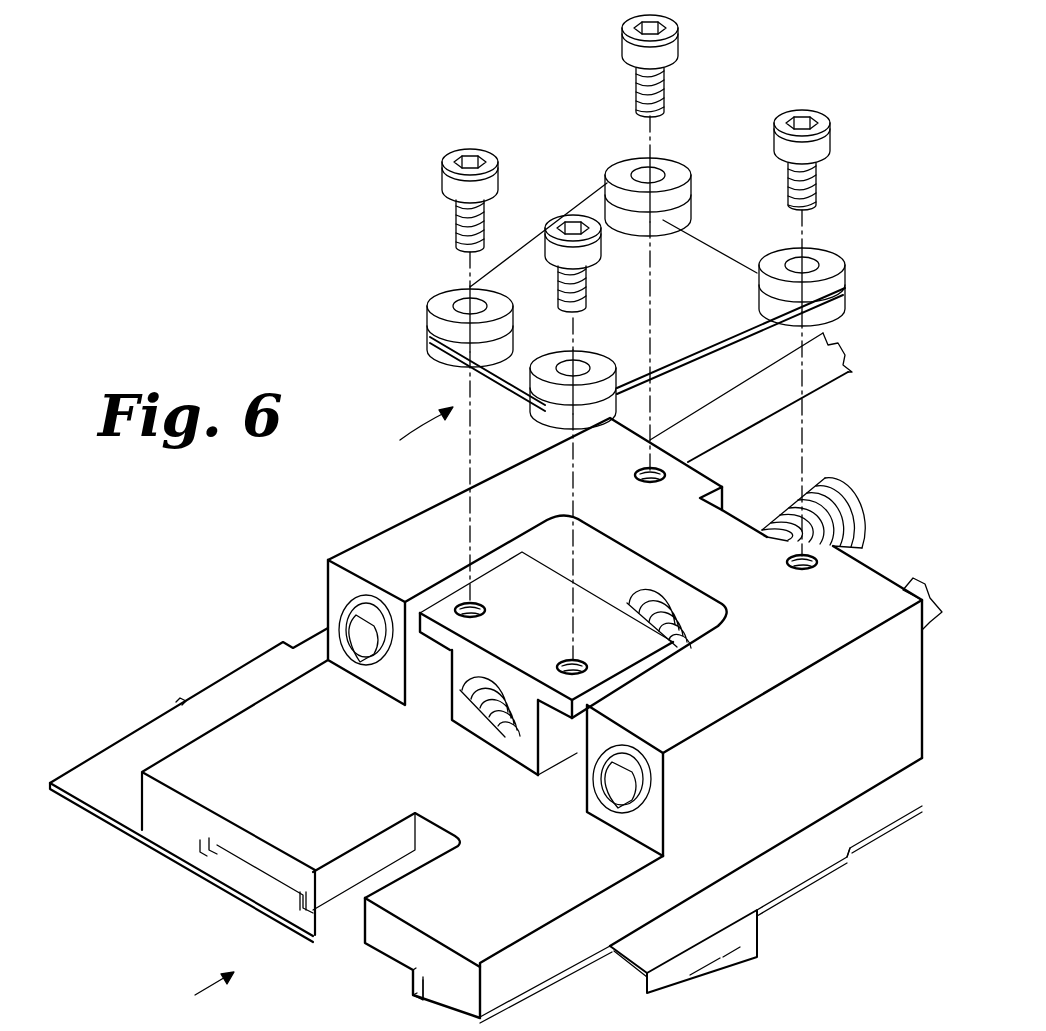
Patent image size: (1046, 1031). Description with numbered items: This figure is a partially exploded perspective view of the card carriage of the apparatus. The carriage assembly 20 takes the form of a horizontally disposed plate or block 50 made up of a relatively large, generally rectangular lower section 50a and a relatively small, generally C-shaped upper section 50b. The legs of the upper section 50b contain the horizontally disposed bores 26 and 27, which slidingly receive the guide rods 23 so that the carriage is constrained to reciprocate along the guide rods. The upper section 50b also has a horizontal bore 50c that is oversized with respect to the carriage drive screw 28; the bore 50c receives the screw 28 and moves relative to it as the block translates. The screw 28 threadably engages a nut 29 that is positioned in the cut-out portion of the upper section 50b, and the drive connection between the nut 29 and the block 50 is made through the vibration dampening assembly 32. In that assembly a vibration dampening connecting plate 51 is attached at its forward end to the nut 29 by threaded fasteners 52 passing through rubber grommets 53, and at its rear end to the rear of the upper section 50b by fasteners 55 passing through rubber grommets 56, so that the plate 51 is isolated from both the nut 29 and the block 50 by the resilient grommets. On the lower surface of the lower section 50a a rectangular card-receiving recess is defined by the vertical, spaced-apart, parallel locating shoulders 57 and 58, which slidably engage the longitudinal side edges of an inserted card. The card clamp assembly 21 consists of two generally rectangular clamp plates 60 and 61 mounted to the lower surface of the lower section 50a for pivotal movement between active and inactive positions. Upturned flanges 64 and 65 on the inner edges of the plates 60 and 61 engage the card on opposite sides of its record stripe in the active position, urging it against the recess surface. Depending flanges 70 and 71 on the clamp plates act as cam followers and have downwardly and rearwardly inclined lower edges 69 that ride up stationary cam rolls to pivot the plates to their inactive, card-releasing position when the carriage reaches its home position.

The carriage assembly 20 is at (197, 991).
The card clamp assembly 21 is at (746, 952).
The guide rods 23 is at (340, 620).
The bore 26 is at (650, 778).
The bore 27 is at (367, 600).
The carriage drive screw 28 is at (458, 708).
The nut 29 is at (520, 745).
The vibration dampening assembly 32 is at (411, 431).
The plate or block 50 is at (852, 775).
The lower section 50a is at (548, 965).
The upper section 50b is at (398, 534).
The horizontal bore 50c is at (637, 580).
The vibration dampening connecting plate 51 is at (690, 270).
The threaded fasteners 52 is at (550, 240).
The rubber grommets 53 is at (522, 403).
The fasteners 55 is at (777, 133).
The rubber grommets 56 is at (693, 207).
The locating shoulder 57 is at (210, 862).
The locating shoulder 58 is at (422, 982).
The clamp plate 60 is at (143, 753).
The clamp plate 61 is at (842, 852).
The upturned flange 64 is at (322, 918).
The upturned flange 65 is at (420, 975).
The lower edges 69 is at (700, 975).
The depending flange 70 is at (210, 682).
The depending flange 71 is at (728, 958).